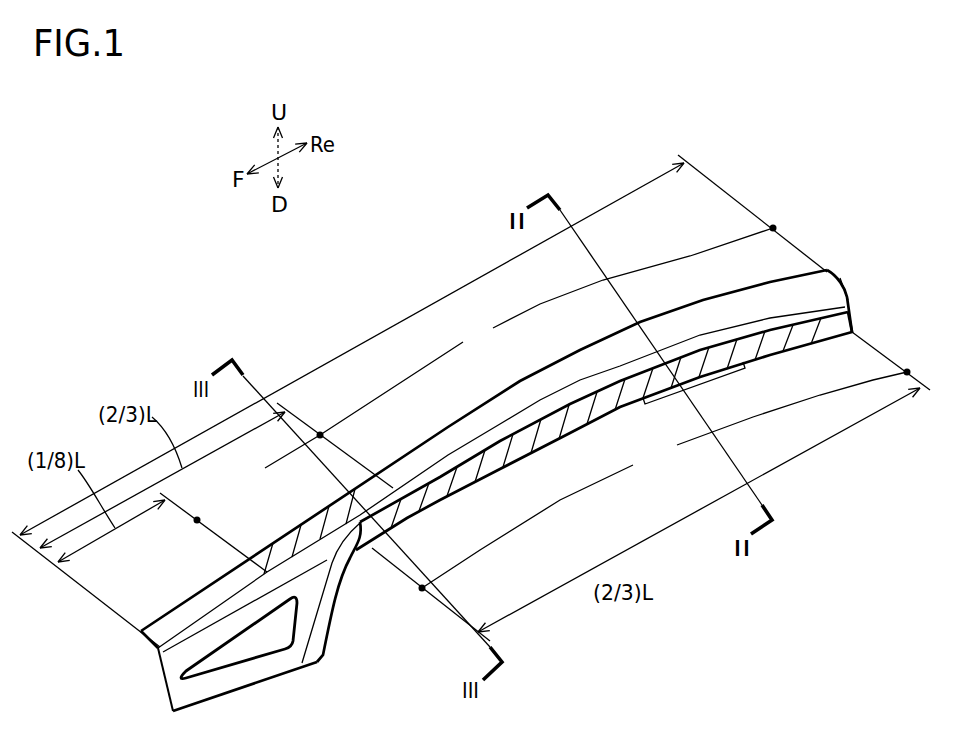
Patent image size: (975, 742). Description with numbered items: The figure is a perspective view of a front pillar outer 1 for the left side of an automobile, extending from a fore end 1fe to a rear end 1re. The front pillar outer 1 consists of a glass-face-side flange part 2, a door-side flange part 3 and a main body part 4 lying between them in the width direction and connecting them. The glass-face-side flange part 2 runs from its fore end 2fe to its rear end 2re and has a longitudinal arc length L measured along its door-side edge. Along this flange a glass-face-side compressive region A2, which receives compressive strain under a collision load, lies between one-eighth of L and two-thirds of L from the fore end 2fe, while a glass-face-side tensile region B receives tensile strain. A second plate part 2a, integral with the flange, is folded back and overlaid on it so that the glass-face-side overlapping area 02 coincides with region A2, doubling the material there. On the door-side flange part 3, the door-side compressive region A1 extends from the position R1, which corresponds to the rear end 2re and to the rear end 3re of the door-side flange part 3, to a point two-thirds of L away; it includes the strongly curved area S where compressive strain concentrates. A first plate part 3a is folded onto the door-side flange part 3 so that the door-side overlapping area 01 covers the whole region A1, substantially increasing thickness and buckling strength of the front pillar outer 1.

The front pillar outer 1 is at (108, 283).
The glass-face-side flange part 2 is at (228, 576).
The door-side flange part 3 is at (355, 543).
The main body part 4 is at (470, 444).
The second plate part 2a is at (268, 548).
The glass-face-side overlapping area 02 is at (309, 531).
The first plate part 3a is at (533, 437).
The door-side overlapping area 01 is at (606, 423).
The fore end of glass-face-side flange part 2fe is at (150, 643).
The fore end of front pillar outer 1fe is at (156, 649).
The rear end of glass-face-side flange part 2re is at (828, 270).
The rear end of front pillar outer 1re is at (847, 296).
The rear end of door-side flange part 3re is at (850, 308).
The position corresponding to rear end of glass-face-side flange part R1 is at (855, 332).
The curved area S is at (699, 387).
The door-side compressive region A1 is at (665, 480).
The glass-face-side compressive region A2 is at (197, 520).
The glass-face-side tensile region B is at (521, 347).
The length of glass-face-side flange part L is at (419, 401).